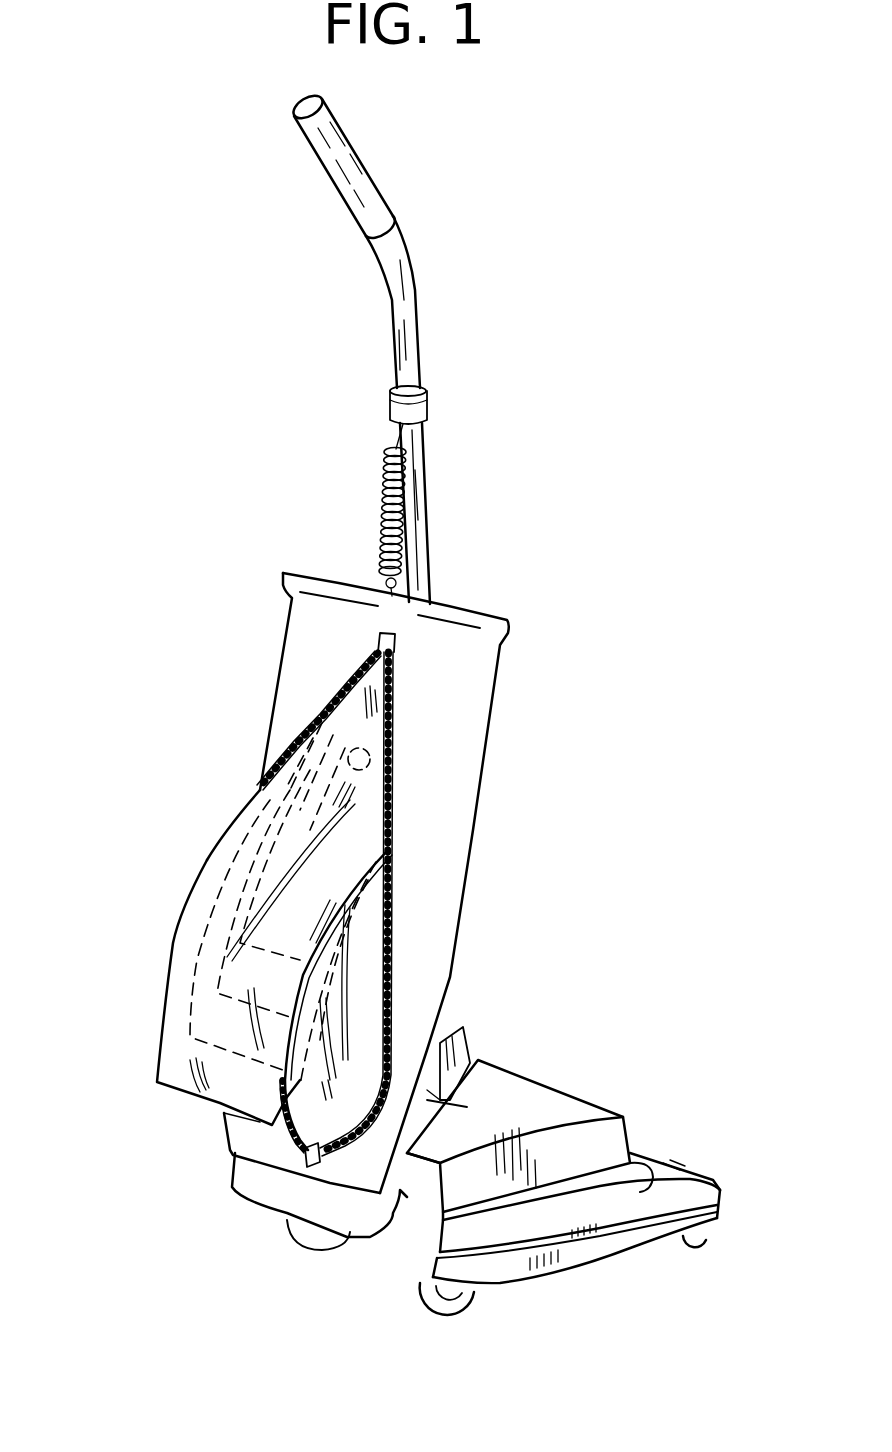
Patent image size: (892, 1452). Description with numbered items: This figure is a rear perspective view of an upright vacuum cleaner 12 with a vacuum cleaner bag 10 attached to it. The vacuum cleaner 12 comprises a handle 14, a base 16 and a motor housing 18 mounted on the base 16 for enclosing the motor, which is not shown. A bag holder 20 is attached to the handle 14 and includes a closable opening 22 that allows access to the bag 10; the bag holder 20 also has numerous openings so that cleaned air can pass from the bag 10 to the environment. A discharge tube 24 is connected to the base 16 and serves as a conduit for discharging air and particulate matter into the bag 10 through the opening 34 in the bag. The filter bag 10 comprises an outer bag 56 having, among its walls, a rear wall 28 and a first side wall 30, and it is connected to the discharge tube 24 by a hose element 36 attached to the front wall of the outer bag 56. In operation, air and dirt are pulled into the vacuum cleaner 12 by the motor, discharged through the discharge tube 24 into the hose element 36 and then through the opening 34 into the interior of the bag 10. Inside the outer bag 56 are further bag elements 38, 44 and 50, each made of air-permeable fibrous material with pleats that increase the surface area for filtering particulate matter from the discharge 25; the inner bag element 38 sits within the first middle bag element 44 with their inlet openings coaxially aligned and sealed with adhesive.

The vacuum cleaner bag 10 is at (195, 827).
The vacuum cleaner 12 is at (548, 788).
The handle 14 is at (400, 302).
The base 16 is at (665, 1163).
The motor housing 18 is at (540, 1100).
The bag holder 20 is at (472, 720).
The closable opening 22 is at (387, 736).
The discharge tube 24 is at (337, 1050).
The discharge 25 is at (460, 1042).
The rear wall 28 is at (193, 938).
The first side wall 30 is at (350, 930).
The opening 34 is at (332, 760).
The hose element 36 is at (343, 1010).
The inner bag element 38 is at (256, 866).
The first middle bag element 44 is at (221, 905).
The bag element 50 is at (185, 974).
The outer bag 56 is at (175, 1008).